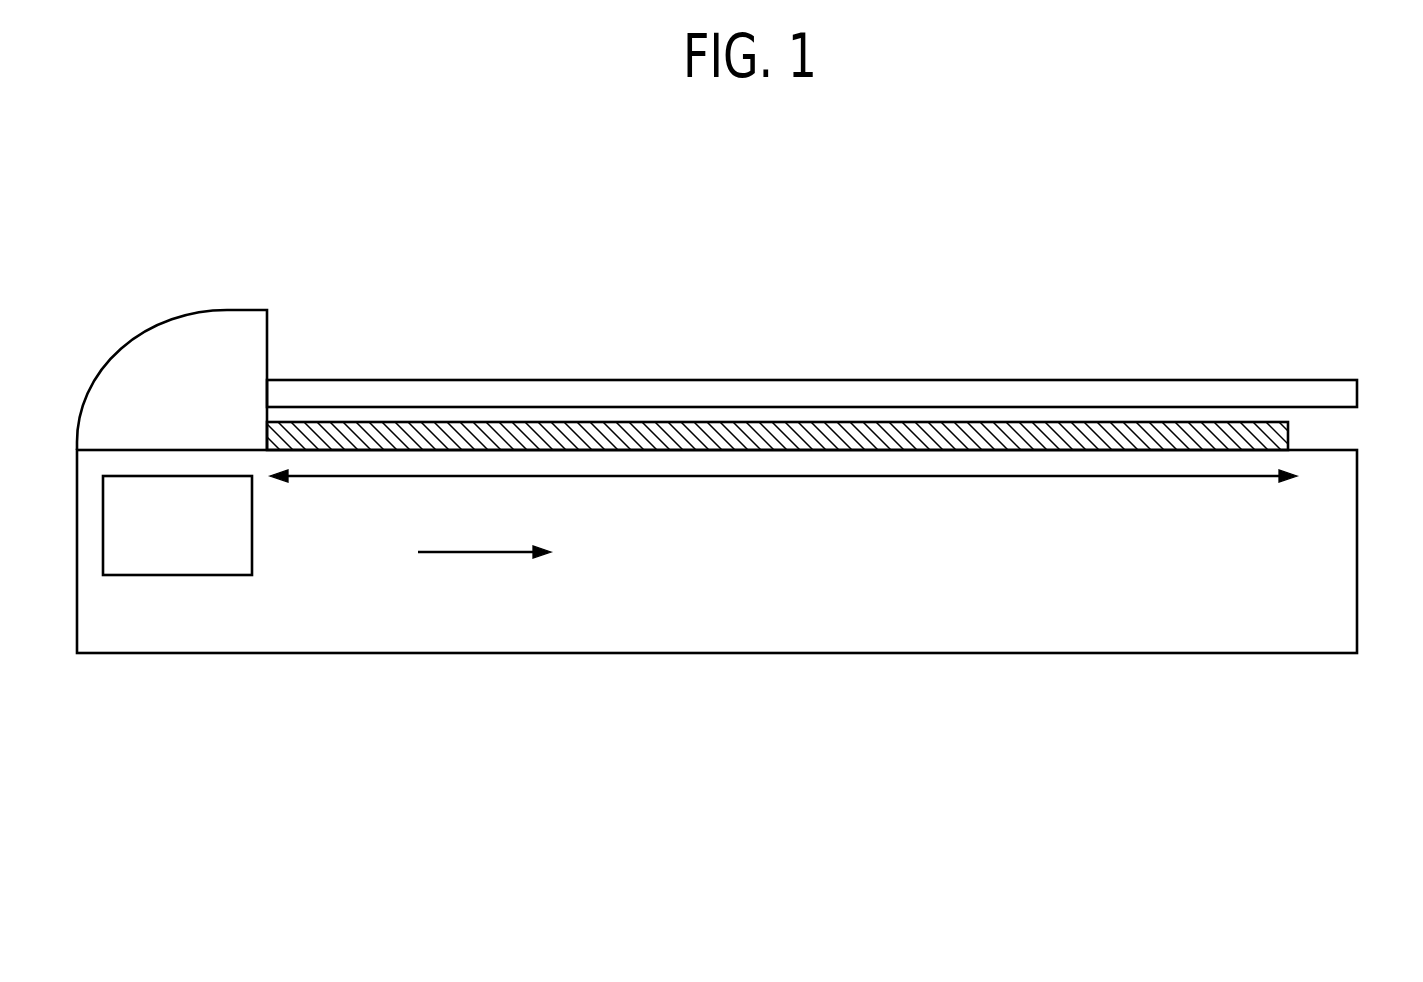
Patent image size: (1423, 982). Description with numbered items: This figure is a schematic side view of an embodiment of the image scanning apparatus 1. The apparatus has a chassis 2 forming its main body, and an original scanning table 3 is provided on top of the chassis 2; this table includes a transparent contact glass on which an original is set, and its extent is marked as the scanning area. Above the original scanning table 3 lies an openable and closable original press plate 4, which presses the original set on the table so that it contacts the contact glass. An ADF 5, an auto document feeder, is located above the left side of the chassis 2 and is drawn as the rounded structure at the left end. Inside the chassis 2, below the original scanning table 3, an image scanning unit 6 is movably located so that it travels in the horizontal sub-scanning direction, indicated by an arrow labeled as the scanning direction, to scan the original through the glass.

The image scanning apparatus 1 is at (1018, 237).
The chassis 2 is at (1357, 530).
The original scanning table 3 is at (1108, 422).
The original press plate 4 is at (572, 380).
The ADF (Auto Document Feeder) 5 is at (228, 310).
The image scanning unit 6 is at (252, 523).